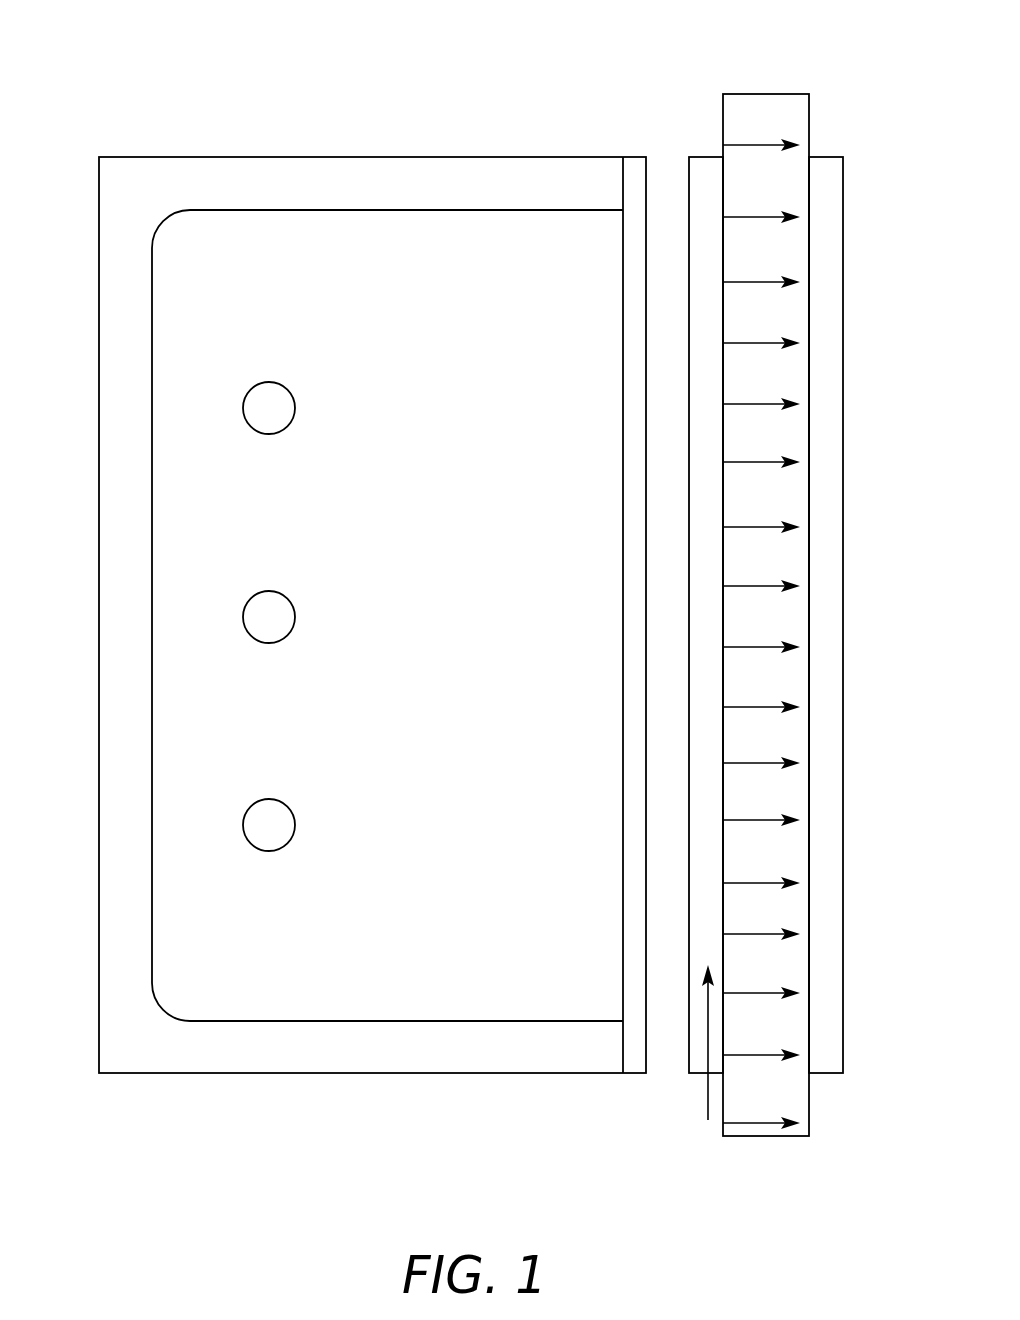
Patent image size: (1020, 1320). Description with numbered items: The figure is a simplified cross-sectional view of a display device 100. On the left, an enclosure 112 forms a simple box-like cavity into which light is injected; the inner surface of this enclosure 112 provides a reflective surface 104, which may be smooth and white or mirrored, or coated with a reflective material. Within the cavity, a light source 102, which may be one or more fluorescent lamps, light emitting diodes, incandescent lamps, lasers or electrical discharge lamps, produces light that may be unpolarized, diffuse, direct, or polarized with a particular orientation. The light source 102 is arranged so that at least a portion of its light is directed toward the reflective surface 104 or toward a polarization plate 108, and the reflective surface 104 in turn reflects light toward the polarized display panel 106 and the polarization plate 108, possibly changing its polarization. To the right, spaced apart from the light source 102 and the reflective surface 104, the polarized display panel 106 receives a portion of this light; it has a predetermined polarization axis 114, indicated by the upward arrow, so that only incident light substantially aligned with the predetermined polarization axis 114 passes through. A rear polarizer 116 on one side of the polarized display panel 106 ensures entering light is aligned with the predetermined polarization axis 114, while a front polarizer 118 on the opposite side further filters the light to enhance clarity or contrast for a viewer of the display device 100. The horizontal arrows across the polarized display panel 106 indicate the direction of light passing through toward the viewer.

The display device 100 is at (806, 46).
The light source 102 is at (285, 407).
The reflective surface 104 is at (152, 324).
The polarized display panel 106 is at (767, 1137).
The polarization plate 108 is at (635, 1073).
The enclosure 112 is at (99, 1013).
The predetermined polarization axis 114 is at (708, 1120).
The rear polarizer 116 is at (705, 157).
The front polarizer 118 is at (829, 157).